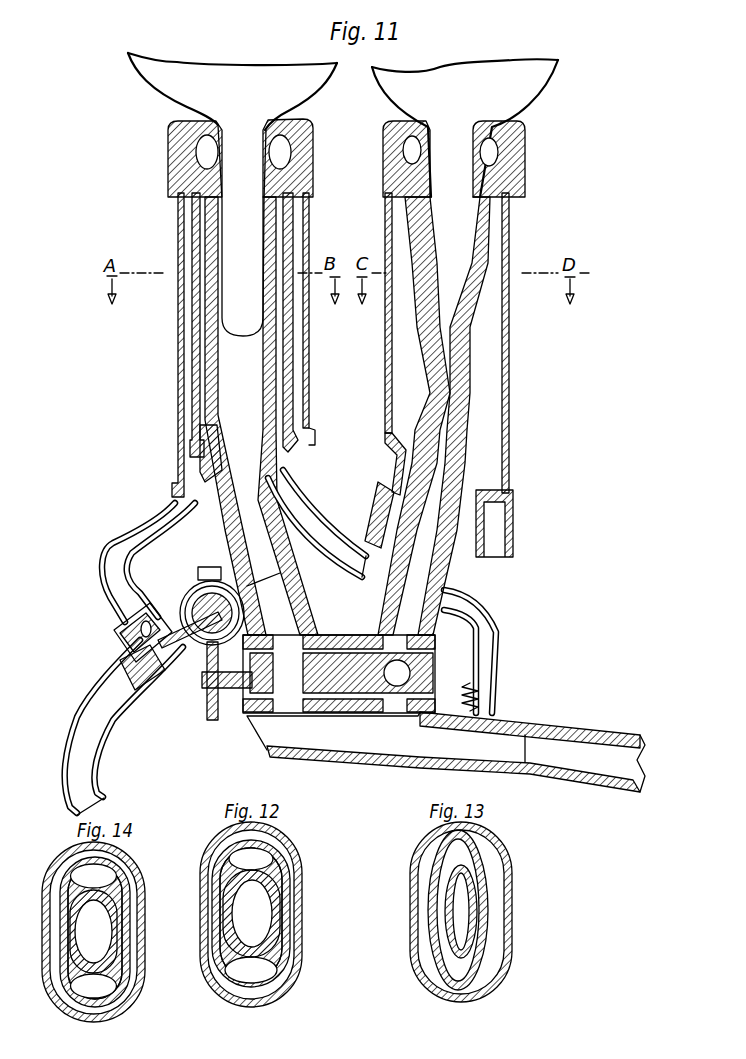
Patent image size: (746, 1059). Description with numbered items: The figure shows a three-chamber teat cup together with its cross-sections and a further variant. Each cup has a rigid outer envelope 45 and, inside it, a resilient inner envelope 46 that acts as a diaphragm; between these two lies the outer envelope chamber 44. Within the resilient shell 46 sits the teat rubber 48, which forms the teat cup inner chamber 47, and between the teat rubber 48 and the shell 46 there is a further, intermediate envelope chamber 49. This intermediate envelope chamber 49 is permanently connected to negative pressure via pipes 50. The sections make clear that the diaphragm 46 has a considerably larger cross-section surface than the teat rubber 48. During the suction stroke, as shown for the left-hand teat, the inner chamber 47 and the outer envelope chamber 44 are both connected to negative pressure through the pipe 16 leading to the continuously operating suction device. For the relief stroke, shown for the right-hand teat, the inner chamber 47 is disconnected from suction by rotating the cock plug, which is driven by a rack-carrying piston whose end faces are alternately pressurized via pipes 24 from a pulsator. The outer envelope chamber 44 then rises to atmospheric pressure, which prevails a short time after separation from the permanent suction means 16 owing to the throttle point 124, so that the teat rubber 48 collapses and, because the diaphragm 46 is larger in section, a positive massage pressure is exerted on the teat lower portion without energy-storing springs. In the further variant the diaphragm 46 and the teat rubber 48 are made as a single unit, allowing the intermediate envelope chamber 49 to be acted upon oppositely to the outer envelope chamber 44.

In FIG. 11, the pipe 16 is at (492, 745).
In FIG. 11, the pipes 24 is at (88, 753).
In FIG. 11, the throttle point 124 is at (137, 637).
In FIG. 11, the outer envelope chamber 44 is at (485, 377).
In FIG. 11, the rigid outer envelope 45 is at (511, 329).
In FIG. 14, the rigid outer envelope 45 is at (128, 866).
In FIG. 12, the rigid outer envelope 45 is at (293, 846).
In FIG. 13, the rigid outer envelope 45 is at (415, 857).
In FIG. 11, the resilient inner envelope 46 is at (463, 408).
In FIG. 14, the resilient inner envelope 46 is at (108, 862).
In FIG. 12, the resilient inner envelope 46 is at (280, 872).
In FIG. 13, the resilient inner envelope 46 is at (432, 880).
In FIG. 11, the teat cup inner chamber 47 is at (232, 365).
In FIG. 11, the teat rubber 48 is at (215, 410).
In FIG. 14, the teat rubber 48 is at (88, 962).
In FIG. 12, the teat rubber 48 is at (277, 948).
In FIG. 13, the teat rubber 48 is at (450, 942).
In FIG. 11, the intermediate envelope chamber 49 is at (205, 318).
In FIG. 11, the pipes 50 is at (320, 542).